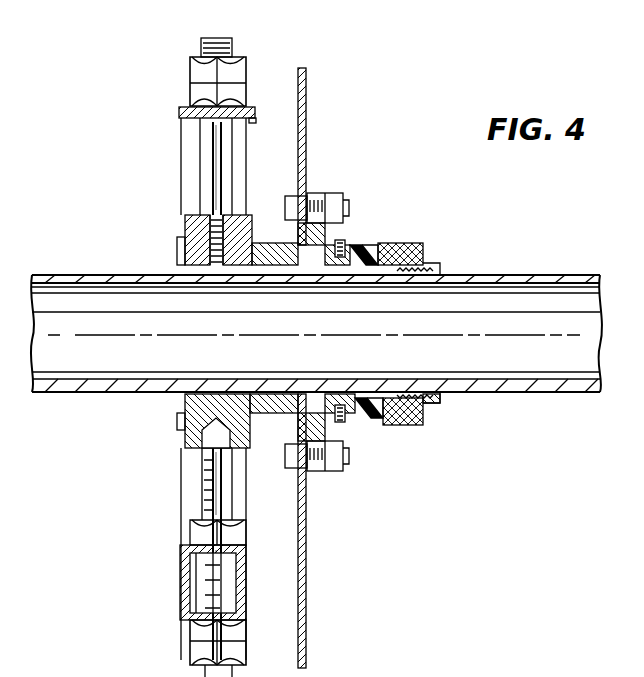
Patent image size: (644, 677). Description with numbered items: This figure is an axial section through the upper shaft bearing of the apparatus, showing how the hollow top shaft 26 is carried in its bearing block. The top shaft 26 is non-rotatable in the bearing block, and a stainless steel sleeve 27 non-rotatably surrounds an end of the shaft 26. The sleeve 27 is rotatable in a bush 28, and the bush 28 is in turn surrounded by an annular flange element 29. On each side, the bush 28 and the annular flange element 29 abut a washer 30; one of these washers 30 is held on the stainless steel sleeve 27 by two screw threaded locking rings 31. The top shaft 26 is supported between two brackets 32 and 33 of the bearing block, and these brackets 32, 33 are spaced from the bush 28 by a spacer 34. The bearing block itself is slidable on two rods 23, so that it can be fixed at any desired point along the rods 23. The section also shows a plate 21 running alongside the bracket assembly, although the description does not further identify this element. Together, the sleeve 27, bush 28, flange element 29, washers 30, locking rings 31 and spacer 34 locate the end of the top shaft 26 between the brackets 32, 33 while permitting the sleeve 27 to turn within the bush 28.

The mounting plate 21 is at (306, 152).
The rods 23 is at (181, 174).
The top shaft 26 is at (557, 393).
The stainless steel sleeve 27 is at (432, 272).
The bush 28 is at (355, 418).
The annular flange element 29 is at (370, 244).
The washer 30 is at (300, 416).
The screw threaded locking rings 31 is at (396, 244).
The bracket 32 is at (185, 240).
The bracket 33 is at (185, 420).
The spacer 34 is at (270, 247).